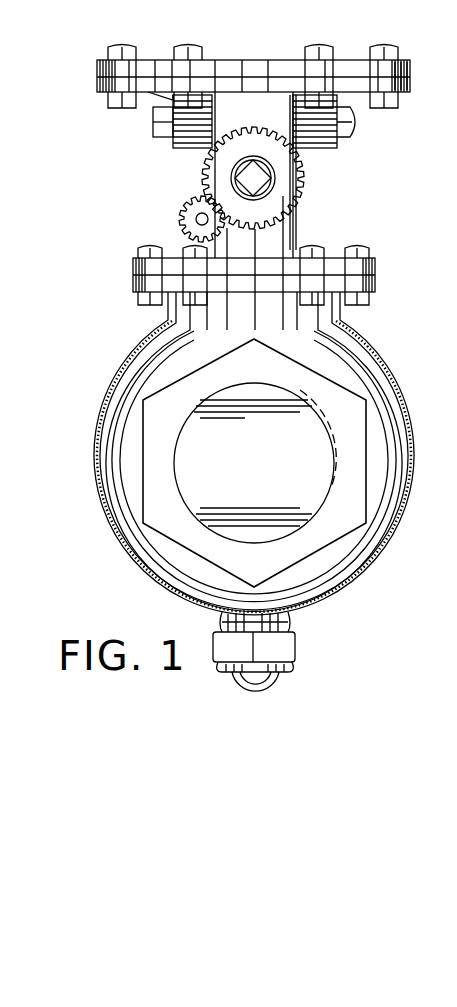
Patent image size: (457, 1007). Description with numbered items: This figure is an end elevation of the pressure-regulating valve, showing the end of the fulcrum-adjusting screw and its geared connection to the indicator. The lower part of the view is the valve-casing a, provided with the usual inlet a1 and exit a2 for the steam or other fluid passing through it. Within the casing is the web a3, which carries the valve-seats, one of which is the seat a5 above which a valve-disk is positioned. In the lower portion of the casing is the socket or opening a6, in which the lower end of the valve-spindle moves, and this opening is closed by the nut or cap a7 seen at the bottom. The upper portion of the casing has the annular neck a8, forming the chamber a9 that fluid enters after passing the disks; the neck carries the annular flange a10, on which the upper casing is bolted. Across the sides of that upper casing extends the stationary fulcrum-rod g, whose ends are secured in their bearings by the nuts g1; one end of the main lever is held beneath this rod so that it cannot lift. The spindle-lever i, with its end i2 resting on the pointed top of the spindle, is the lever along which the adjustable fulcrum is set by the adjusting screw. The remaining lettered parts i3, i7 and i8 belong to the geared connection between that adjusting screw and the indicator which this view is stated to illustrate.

The valve-casing a is at (368, 381).
The inlet a1 is at (197, 415).
The exit a2 is at (173, 145).
The web a3 is at (255, 317).
The valve-seat a5 is at (98, 87).
The socket or opening a6 is at (183, 44).
The nut or cap a7 is at (287, 648).
The annular neck a8 is at (258, 72).
The chamber a9 is at (413, 80).
The annular flange a10 is at (360, 283).
The fulcrum-rod g is at (360, 124).
The nuts g1 is at (153, 118).
The spindle-lever i is at (232, 182).
The end of spindle-lever i2 is at (263, 173).
The gear support i3 is at (283, 202).
The pinion pivot i7 is at (196, 218).
The pinion i8 is at (190, 203).